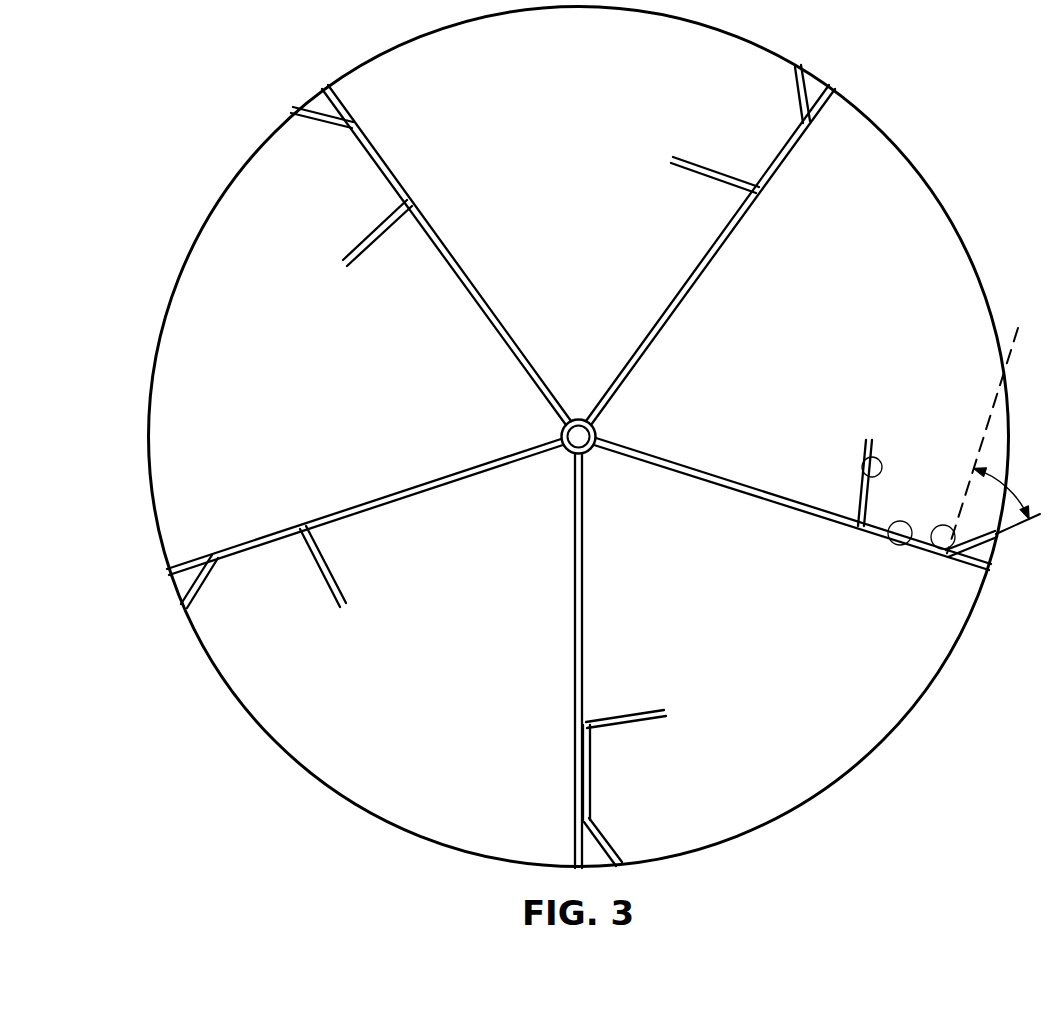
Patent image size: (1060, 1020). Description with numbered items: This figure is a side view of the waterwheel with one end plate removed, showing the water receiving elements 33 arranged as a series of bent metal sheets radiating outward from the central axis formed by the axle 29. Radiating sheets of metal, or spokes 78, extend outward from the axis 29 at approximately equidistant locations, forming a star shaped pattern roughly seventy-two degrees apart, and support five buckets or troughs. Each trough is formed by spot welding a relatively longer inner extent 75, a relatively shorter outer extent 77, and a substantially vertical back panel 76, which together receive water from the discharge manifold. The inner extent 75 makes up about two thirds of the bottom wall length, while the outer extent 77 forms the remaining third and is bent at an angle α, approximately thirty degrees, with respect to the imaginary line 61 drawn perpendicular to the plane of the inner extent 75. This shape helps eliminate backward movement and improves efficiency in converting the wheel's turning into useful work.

The axle 29 is at (578, 434).
The water receiving elements 33 is at (817, 472).
The imaginary line 61 is at (978, 440).
The inner extent 75 is at (897, 545).
The back panel 76 is at (866, 466).
The outer extent 77 is at (938, 549).
The radiating sheets of metal (spokes) 78 is at (722, 478).